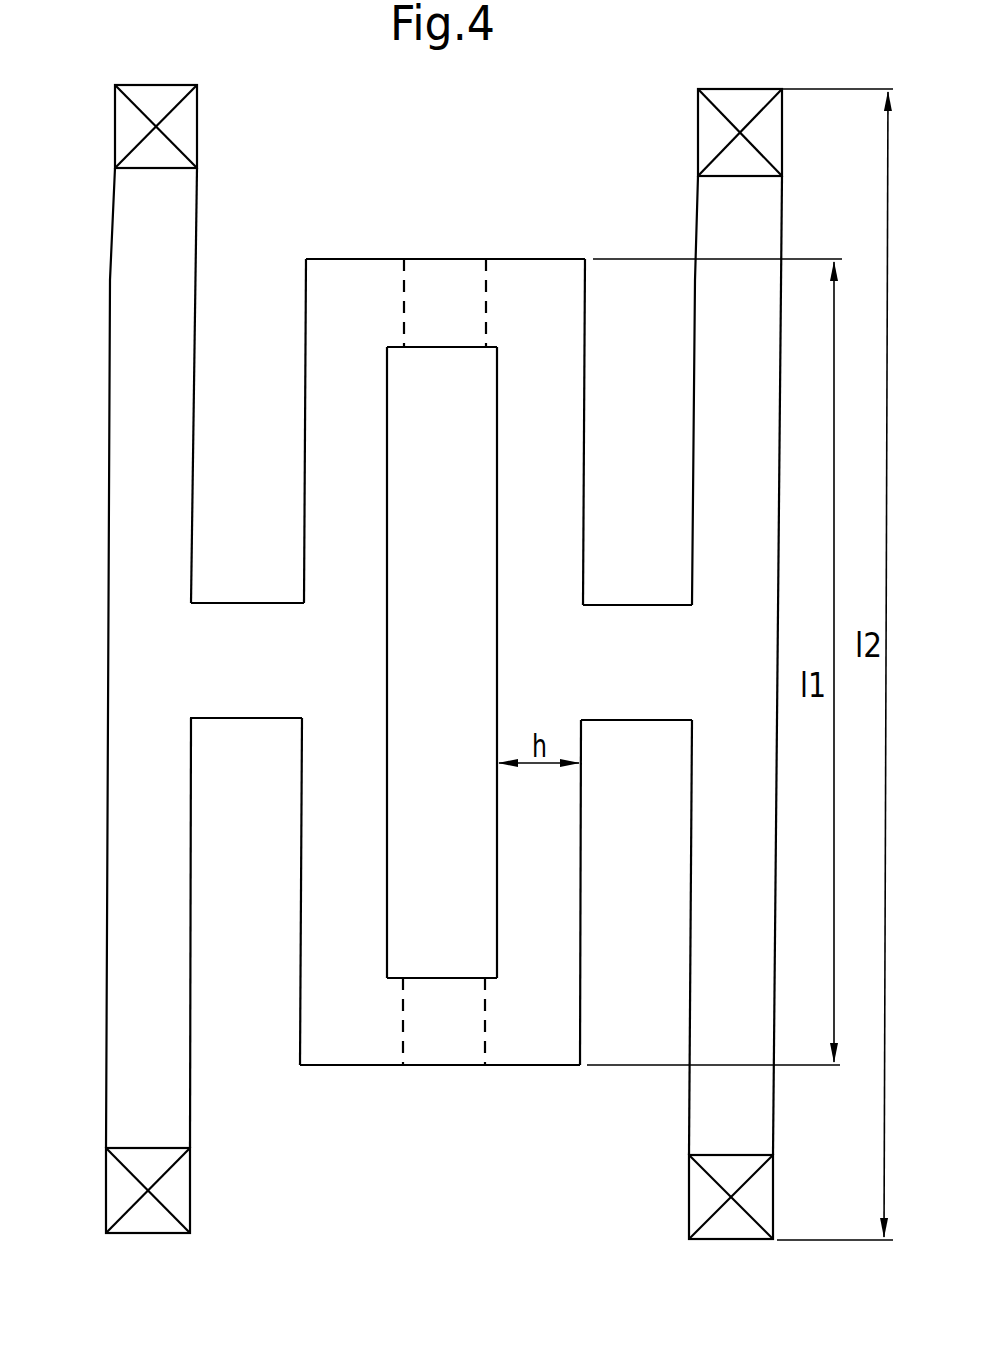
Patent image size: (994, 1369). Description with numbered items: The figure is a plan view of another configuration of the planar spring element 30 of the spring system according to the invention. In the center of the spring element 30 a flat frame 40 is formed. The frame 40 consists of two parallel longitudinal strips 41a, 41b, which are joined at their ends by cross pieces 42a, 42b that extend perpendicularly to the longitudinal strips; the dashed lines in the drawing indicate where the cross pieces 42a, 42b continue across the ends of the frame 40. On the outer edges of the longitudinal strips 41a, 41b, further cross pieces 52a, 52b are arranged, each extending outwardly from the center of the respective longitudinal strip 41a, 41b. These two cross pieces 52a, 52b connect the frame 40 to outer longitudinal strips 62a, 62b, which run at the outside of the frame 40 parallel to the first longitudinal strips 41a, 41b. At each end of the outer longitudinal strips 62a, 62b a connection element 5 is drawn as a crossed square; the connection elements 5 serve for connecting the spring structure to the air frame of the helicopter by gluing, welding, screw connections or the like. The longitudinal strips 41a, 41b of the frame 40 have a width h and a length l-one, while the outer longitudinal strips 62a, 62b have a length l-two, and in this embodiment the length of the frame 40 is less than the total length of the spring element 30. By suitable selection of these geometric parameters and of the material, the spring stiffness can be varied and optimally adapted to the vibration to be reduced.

The planar spring element 30 is at (108, 70).
The connection elements 5 is at (162, 92).
The flat frame 40 is at (441, 647).
The first longitudinal strip 41a is at (322, 498).
The second longitudinal strip 41b is at (560, 455).
The first cross piece 42a is at (362, 291).
The second cross piece 42b is at (385, 1050).
The outer cross piece 52a is at (240, 630).
The outer cross piece 52b is at (603, 630).
The outer longitudinal strip 62a is at (128, 347).
The outer longitudinal strip 62b is at (711, 380).